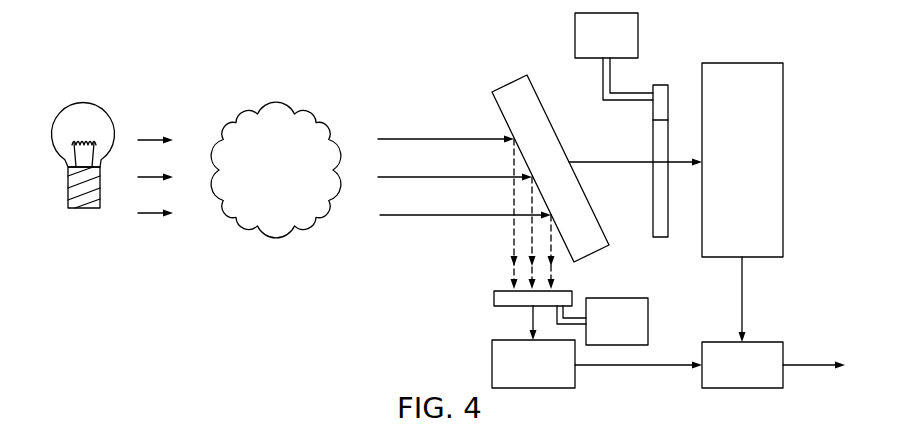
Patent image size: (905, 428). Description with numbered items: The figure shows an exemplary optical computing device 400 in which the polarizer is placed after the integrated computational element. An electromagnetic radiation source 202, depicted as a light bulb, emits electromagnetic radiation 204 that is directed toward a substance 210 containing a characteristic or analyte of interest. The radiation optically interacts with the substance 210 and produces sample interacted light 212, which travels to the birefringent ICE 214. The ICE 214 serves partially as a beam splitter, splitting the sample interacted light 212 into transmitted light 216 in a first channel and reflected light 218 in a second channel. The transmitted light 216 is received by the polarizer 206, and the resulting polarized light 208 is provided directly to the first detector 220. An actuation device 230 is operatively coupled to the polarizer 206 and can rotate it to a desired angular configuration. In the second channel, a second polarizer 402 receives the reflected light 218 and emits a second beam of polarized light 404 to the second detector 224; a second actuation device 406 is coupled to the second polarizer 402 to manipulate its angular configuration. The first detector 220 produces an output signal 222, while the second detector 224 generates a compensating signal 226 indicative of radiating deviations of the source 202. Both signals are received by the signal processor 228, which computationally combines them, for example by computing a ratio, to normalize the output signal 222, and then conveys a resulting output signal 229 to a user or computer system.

The optical computing device 400 is at (378, 53).
The electromagnetic radiation source 202 is at (68, 103).
The electromagnetic radiation 204 is at (155, 215).
The substance 210 is at (290, 183).
The sample interacted light 212 is at (402, 216).
The ICE 214 is at (533, 90).
The transmitted light 216 is at (590, 160).
The reflected light 218 is at (512, 240).
The actuation device 230 is at (622, 45).
The polarizer 206 is at (660, 88).
The polarized light 208 is at (677, 166).
The first detector 220 is at (758, 169).
The output signal 222 is at (740, 292).
The signal processor 228 is at (758, 373).
The resulting output signal 229 is at (812, 363).
The compensating signal 226 is at (665, 363).
The second polarizer 402 is at (494, 298).
The second beam of polarized light 404 is at (530, 318).
The second actuation device 406 is at (633, 331).
The second detector 224 is at (549, 373).